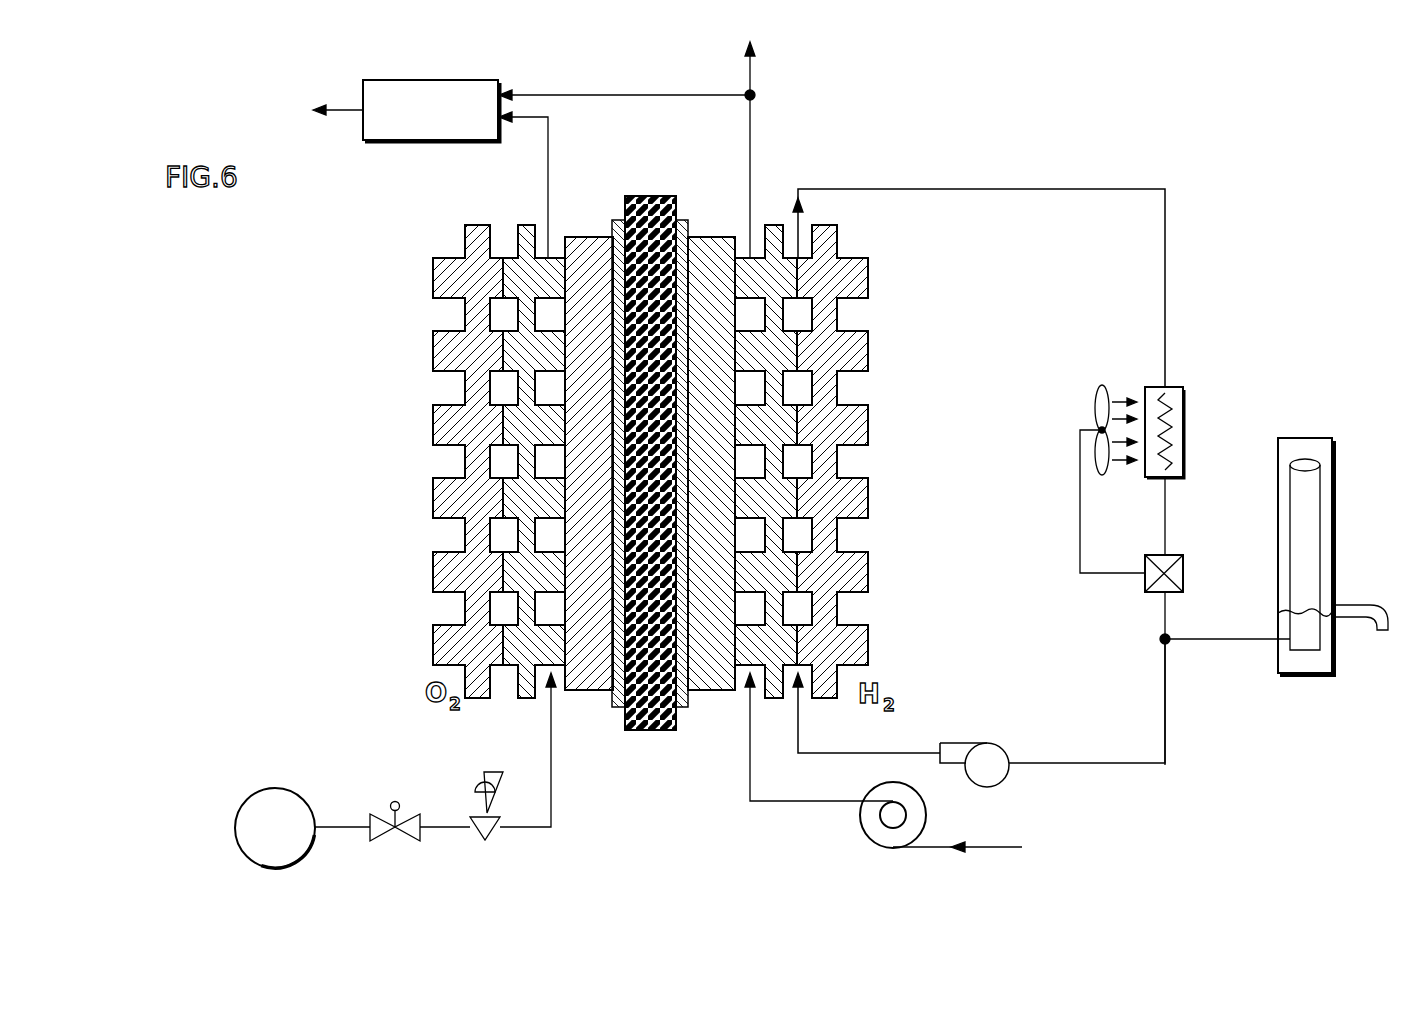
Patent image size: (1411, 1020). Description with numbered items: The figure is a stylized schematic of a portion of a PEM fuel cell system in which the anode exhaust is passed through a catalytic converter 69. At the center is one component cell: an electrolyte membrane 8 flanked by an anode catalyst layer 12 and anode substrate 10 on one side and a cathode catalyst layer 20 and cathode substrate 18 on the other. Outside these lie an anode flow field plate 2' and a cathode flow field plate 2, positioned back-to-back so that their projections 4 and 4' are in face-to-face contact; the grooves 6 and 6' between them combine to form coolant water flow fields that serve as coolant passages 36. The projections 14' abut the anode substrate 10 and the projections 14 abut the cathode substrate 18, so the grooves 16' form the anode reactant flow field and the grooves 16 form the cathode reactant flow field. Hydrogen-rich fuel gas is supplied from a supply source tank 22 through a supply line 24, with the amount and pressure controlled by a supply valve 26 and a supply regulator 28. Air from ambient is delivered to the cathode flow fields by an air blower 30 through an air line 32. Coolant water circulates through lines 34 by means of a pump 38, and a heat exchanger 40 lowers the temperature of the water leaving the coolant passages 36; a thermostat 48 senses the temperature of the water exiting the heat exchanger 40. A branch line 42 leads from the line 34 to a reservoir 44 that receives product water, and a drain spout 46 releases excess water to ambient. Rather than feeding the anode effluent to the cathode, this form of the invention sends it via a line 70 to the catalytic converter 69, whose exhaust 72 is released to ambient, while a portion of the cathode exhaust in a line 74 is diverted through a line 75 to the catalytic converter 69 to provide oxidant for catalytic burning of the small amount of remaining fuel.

The cathode flow field plate 2 is at (615, 468).
The anode flow field plate 2' is at (677, 458).
The projections 4 is at (641, 612).
The projections 4' is at (692, 260).
The grooves 6 is at (597, 532).
The grooves 6' is at (664, 498).
The membrane 8 is at (670, 195).
The anode substrate 10 is at (572, 688).
The anode catalyst layer 12 is at (627, 709).
The projections 14 is at (569, 647).
The projections 14' is at (730, 277).
The grooves 16 is at (581, 574).
The grooves 16' is at (720, 424).
The cathode substrate 18 is at (710, 246).
The cathode catalyst layer 20 is at (682, 221).
The supply source tank 22 is at (278, 788).
The supply line 24 is at (515, 830).
The supply valve 26 is at (400, 801).
The supply regulator 28 is at (500, 772).
The air blower 30 is at (862, 828).
The air line 32 is at (770, 801).
The lines 34 is at (888, 753).
The coolant passages 36 is at (497, 608).
The pump 38 is at (988, 776).
The heat exchanger 40 is at (1183, 432).
The branch line 42 is at (1195, 642).
The reservoir 44 is at (1308, 518).
The drain spout 46 is at (1350, 600).
The thermostat 48 is at (1183, 577).
The catalytic converter 69 is at (437, 80).
The line 70 is at (535, 118).
The exhaust 72 is at (348, 115).
The line 74 is at (755, 63).
The line 75 is at (618, 95).